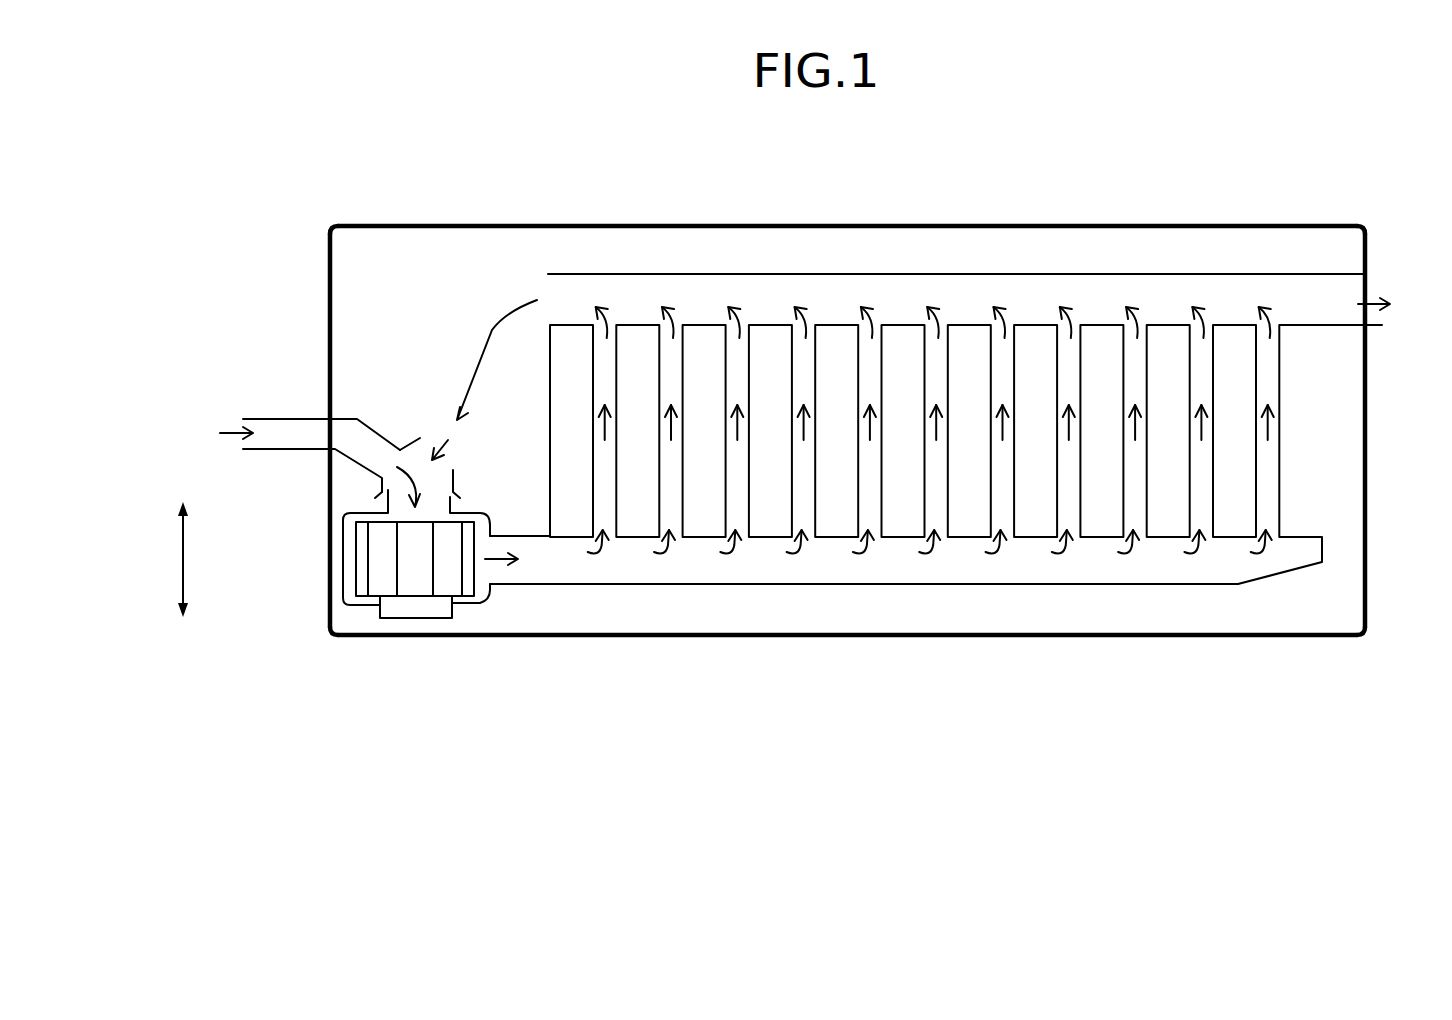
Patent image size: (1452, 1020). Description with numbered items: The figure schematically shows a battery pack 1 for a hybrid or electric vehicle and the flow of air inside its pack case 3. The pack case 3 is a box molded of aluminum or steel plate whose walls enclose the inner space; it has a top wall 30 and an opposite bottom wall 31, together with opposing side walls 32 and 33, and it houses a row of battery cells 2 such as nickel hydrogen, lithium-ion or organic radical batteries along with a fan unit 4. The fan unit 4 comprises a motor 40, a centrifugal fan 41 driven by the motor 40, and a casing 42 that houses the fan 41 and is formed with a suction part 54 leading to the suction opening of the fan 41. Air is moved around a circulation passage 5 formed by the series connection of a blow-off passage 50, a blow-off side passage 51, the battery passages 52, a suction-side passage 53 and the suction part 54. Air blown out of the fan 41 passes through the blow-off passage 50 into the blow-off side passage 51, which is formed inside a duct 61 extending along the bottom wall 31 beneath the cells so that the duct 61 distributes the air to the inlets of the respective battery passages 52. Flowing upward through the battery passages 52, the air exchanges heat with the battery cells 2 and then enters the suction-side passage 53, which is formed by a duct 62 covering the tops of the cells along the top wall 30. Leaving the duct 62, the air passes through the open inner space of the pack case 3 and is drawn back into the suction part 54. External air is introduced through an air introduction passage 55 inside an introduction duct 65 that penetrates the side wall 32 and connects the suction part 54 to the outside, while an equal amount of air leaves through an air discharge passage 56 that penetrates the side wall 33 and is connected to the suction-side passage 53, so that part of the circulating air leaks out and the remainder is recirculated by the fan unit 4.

The battery pack 1 is at (1234, 201).
The battery cells 2 is at (835, 325).
The pack case 3 is at (324, 619).
The fan unit 4 is at (458, 618).
The circulation passage 5 is at (487, 345).
The top wall 30 is at (683, 226).
The bottom wall 31 is at (800, 636).
The side wall 32 is at (330, 262).
The side wall 33 is at (1366, 500).
The motor 40 is at (418, 618).
The fan 41 is at (356, 543).
The casing 42 is at (342, 570).
The blow-off passage 50 is at (497, 567).
The blow-off side passage 51 is at (937, 558).
The battery passages 52 is at (1200, 391).
The suction-side passage 53 is at (972, 292).
The suction part 54 is at (412, 512).
The air introduction passage 55 is at (352, 428).
The air discharge passage 56 is at (1366, 284).
The duct 61 is at (1057, 584).
The duct 62 is at (1055, 275).
The introduction duct 65 is at (271, 420).